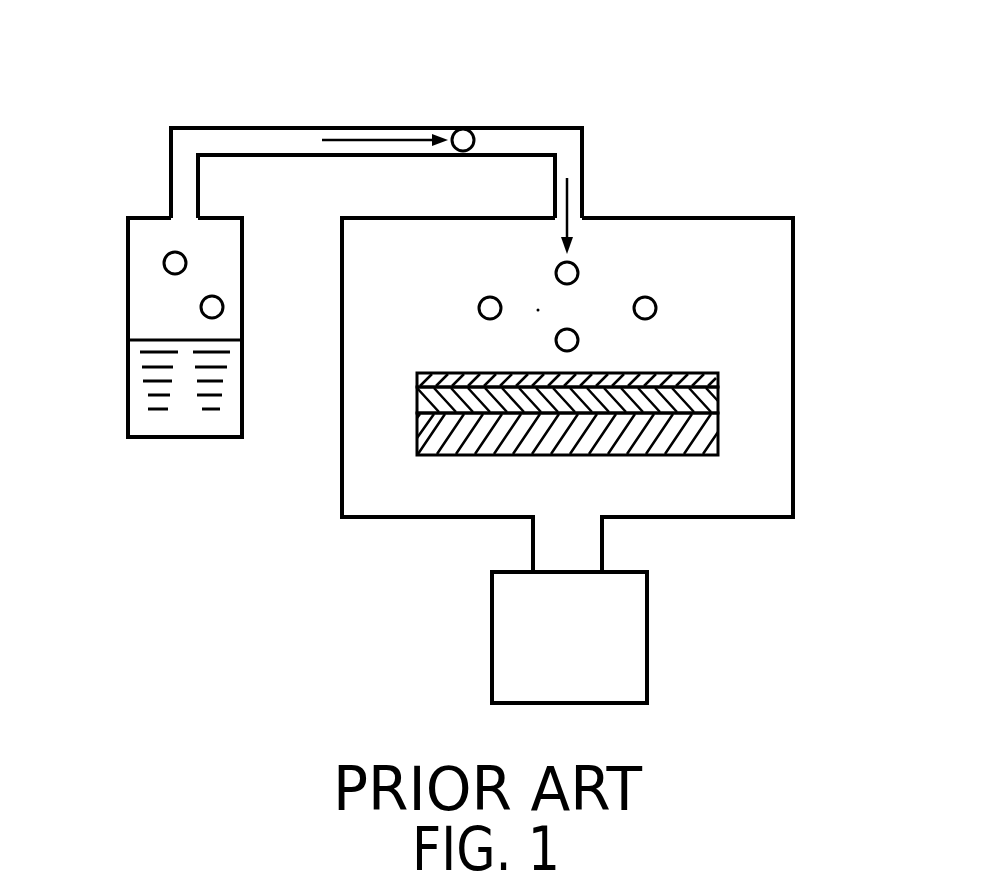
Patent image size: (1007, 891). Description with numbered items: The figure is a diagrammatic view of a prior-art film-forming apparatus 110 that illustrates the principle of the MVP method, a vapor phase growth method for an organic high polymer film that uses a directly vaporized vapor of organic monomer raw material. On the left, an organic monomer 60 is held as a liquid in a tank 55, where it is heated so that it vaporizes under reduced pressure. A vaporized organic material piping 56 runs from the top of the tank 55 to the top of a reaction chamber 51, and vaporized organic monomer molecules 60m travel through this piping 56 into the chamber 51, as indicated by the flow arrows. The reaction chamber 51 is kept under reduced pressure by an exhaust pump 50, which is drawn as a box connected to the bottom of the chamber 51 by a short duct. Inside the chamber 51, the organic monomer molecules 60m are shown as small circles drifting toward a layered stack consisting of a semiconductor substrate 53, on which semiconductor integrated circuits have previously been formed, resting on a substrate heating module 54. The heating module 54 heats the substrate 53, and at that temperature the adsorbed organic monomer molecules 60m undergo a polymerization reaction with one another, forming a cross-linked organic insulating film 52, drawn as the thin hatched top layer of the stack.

The prior art plasma polymerization apparatus 110 is at (770, 113).
The exhaust pump 50 is at (647, 608).
The reaction chamber 51 is at (390, 512).
The organic insulating film 52 is at (722, 378).
The semiconductor substrate 53 is at (722, 395).
The substrate heating module 54 is at (722, 430).
The tank 55 is at (128, 258).
The vaporized organic material piping 56 is at (171, 157).
The organic monomer 60 is at (183, 421).
The organic monomer molecules 60m is at (190, 260).